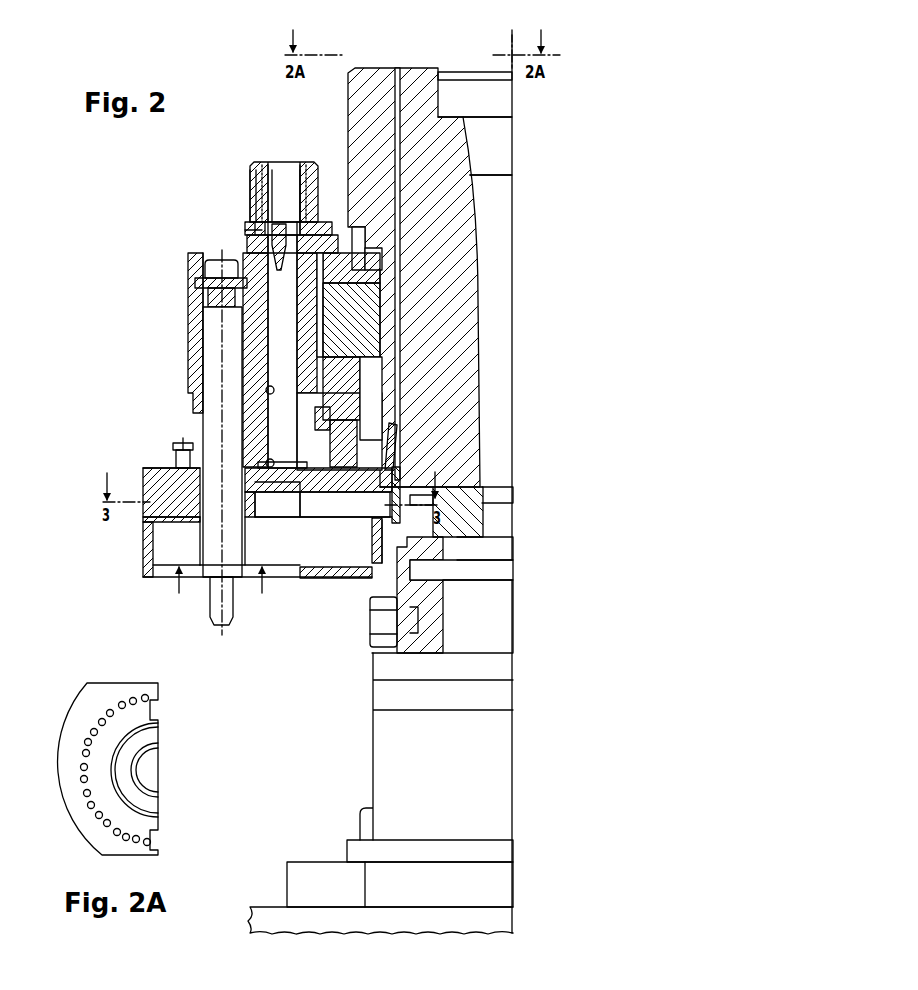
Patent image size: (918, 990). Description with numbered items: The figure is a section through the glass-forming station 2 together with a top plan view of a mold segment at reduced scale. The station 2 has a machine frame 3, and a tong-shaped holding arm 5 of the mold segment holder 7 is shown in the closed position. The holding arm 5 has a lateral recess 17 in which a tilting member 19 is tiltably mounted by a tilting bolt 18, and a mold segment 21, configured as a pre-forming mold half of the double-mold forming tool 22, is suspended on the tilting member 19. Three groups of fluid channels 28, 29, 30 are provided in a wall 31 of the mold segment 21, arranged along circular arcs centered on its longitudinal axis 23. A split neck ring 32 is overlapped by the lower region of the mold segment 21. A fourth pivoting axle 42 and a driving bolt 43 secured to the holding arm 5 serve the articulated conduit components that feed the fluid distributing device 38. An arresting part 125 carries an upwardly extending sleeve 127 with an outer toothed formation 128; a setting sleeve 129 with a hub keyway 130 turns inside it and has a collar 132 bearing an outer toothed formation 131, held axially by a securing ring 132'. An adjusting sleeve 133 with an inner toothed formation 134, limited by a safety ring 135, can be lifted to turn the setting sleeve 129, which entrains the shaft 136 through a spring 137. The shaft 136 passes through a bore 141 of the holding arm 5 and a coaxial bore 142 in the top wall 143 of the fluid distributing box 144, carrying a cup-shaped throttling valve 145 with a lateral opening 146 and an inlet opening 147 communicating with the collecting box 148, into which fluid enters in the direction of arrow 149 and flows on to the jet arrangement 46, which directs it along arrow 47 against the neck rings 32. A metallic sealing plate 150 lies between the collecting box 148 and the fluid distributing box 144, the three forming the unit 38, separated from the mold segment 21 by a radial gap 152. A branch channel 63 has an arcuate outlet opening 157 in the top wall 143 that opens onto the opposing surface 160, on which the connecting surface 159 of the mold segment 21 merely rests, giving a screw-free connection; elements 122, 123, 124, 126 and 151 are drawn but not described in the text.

In FIG. 2, the station 2 is at (336, 770).
In FIG. 2, the machine frame 3 is at (262, 915).
In FIG. 2, the holding arm 5 is at (190, 292).
In FIG. 2, the mold segment holder 7 is at (186, 323).
In FIG. 2, the lateral recess 17 is at (380, 310).
In FIG. 2, the tilting bolt 18 is at (322, 410).
In FIG. 2, the tilting member 19 is at (380, 347).
In FIG. 2, the mold segment 21 is at (430, 70).
In FIG. 2, the forming tool 22 is at (399, 77).
In FIG. 2, the longitudinal axis 23 is at (510, 38).
In FIG. 2A, the fluid channels 28 is at (99, 815).
In FIG. 2, the fluid channels 29 is at (400, 155).
In FIG. 2A, the fluid channels 29 is at (90, 805).
In FIG. 2A, the fluid channels 30 is at (133, 701).
In FIG. 2, the wall 31 is at (447, 225).
In FIG. 2, the neck ring 32 is at (395, 592).
In FIG. 2, the fluid distributing device 38 is at (136, 489).
In FIG. 2, the fourth pivoting axle 42 is at (204, 345).
In FIG. 2, the driving bolt 43 is at (208, 405).
In FIG. 2, the jet arrangement 46 is at (380, 548).
In FIG. 2, the arrow 47 is at (370, 572).
In FIG. 2, the branch channel 63 is at (372, 530).
In FIG. 2, the channel 122 is at (320, 268).
In FIG. 2, the block 123 is at (247, 243).
In FIG. 2, the flange 124 is at (262, 224).
In FIG. 2, the arresting part 125 is at (250, 232).
In FIG. 2, the sleeve 126 is at (249, 176).
In FIG. 2, the sleeve 127 is at (258, 230).
In FIG. 2, the outer toothed formation 128 is at (258, 195).
In FIG. 2, the setting sleeve 129 is at (299, 165).
In FIG. 2, the hub keyway 130 is at (271, 165).
In FIG. 2, the outer toothed formation 131 is at (262, 180).
In FIG. 2, the collar 132 is at (284, 176).
In FIG. 2, the securing ring 132' is at (324, 213).
In FIG. 2, the adjusting sleeve 133 is at (253, 162).
In FIG. 2, the inner toothed formation 134 is at (309, 192).
In FIG. 2, the safety ring 135 is at (305, 165).
In FIG. 2, the shaft 136 is at (268, 365).
In FIG. 2, the spring 137 is at (278, 226).
In FIG. 2, the bore 141 is at (270, 394).
In FIG. 2, the bore 142 is at (268, 460).
In FIG. 2, the top wall 143 is at (322, 476).
In FIG. 2, the fluid distributing box 144 is at (142, 466).
In FIG. 2, the throttling valve 145 is at (250, 482).
In FIG. 2, the lateral opening 146 is at (300, 503).
In FIG. 2, the inlet opening 147 is at (262, 520).
In FIG. 2, the collecting box 148 is at (143, 570).
In FIG. 2, the arrow 149 is at (176, 588).
In FIG. 2, the sealing plate 150 is at (145, 518).
In FIG. 2, the screw 151 is at (175, 430).
In FIG. 2, the radial gap 152 is at (402, 478).
In FIG. 2, the outlet opening 157 is at (395, 500).
In FIG. 2, the connecting surface 159 is at (380, 470).
In FIG. 2, the opposing surface 160 is at (400, 472).